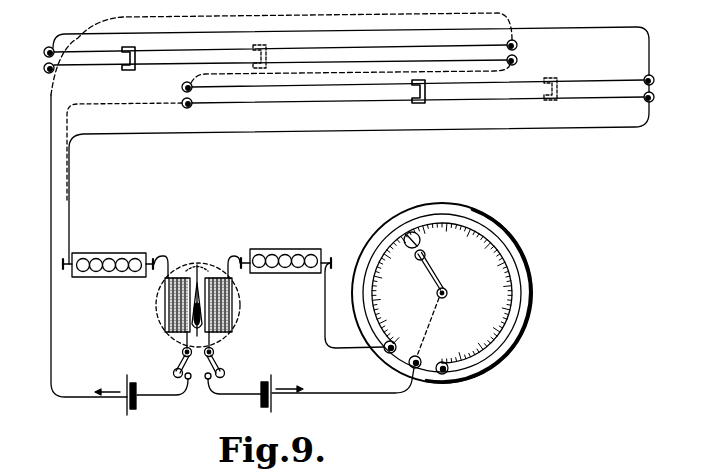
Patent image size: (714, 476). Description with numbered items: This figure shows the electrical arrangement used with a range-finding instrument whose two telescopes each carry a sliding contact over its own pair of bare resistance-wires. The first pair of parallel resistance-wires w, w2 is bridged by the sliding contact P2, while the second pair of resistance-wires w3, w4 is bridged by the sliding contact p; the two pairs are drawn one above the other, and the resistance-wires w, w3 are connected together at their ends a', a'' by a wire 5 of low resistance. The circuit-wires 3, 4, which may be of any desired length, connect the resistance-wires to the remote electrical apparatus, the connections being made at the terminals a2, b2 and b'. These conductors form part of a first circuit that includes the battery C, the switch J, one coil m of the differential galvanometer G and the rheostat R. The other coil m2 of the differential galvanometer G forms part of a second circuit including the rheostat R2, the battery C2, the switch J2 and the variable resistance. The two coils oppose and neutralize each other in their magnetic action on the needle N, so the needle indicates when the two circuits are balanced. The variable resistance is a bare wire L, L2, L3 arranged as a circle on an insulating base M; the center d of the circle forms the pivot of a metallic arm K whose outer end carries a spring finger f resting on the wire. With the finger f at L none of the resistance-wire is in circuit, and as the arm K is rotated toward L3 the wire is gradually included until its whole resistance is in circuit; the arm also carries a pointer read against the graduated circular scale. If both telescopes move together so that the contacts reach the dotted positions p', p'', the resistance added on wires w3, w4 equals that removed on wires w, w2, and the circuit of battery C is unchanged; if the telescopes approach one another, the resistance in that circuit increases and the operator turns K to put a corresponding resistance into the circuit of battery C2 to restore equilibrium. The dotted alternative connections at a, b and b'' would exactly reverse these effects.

The connection point of resistance-wire w4 a2 is at (41, 47).
The connection point of resistance-wire w2 b2 is at (40, 70).
The resistance-wire w3 is at (280, 42).
The sliding contact p is at (134, 64).
The displaced position of contact p p' is at (267, 61).
The resistance-wire w4 is at (350, 70).
The wire of low resistance 5 is at (281, 54).
The connection point of resistance-wire w3 a'' is at (521, 41).
The connection point of resistance-wire w4 b'' is at (521, 61).
The connection point of resistance-wire w a' is at (658, 76).
The connection point of resistance-wire w2 b' is at (658, 97).
The connection point of resistance-wire w a is at (180, 82).
The connection point of resistance-wire w2 b is at (179, 103).
The resistance-wire w is at (418, 75).
The resistance-wire w2 is at (418, 106).
The sliding contact P2 is at (426, 99).
The displaced position of contact P2 p'' is at (560, 95).
The circuit-wire 4 is at (359, 183).
The circuit-wire 3 is at (83, 246).
The rheostat R is at (108, 276).
The differential galvanometer G is at (198, 296).
The needle N is at (197, 305).
The rheostat R2 is at (286, 273).
The base M is at (533, 286).
The variable resistance wire L2 is at (495, 233).
The metallic arm K is at (434, 270).
The center of the circle / pivot d is at (450, 295).
The spring metal finger f is at (408, 232).
The end of variable resistance wire L is at (394, 345).
The end of variable resistance wire L3 is at (443, 362).
The coil of differential galvanometer m is at (175, 353).
The coil of differential galvanometer m2 is at (226, 350).
The switch J is at (183, 374).
The switch J2 is at (217, 375).
The battery C is at (115, 396).
The battery C2 is at (282, 393).